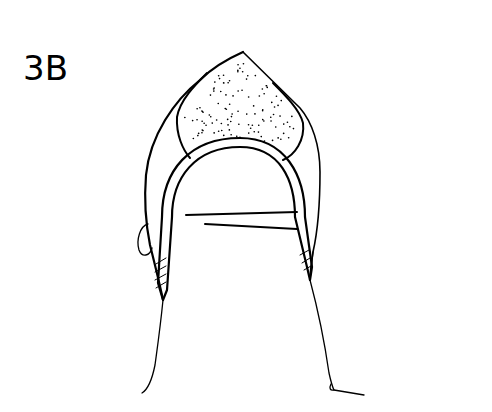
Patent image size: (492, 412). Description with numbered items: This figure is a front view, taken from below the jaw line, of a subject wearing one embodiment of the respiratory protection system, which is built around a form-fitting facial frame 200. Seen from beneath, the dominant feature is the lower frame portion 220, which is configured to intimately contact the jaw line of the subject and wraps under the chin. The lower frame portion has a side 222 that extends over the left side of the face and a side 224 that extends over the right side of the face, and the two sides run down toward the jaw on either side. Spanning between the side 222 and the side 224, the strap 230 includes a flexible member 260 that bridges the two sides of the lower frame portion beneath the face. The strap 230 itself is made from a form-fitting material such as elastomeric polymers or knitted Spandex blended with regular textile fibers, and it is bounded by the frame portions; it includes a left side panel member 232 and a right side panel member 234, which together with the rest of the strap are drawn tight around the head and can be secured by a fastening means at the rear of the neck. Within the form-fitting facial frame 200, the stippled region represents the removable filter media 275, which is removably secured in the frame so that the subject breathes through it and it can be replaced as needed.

The form-fitting facial frame 200 is at (341, 80).
The lower frame portion 220 is at (318, 250).
The side of the lower frame portion 222 is at (303, 218).
The side of the lower frame portion 224 is at (169, 207).
The strap 230 is at (307, 178).
The left side panel member 232 is at (303, 165).
The right side panel member 234 is at (177, 161).
The flexible member 260 is at (208, 215).
The removable filter media 275 is at (280, 112).